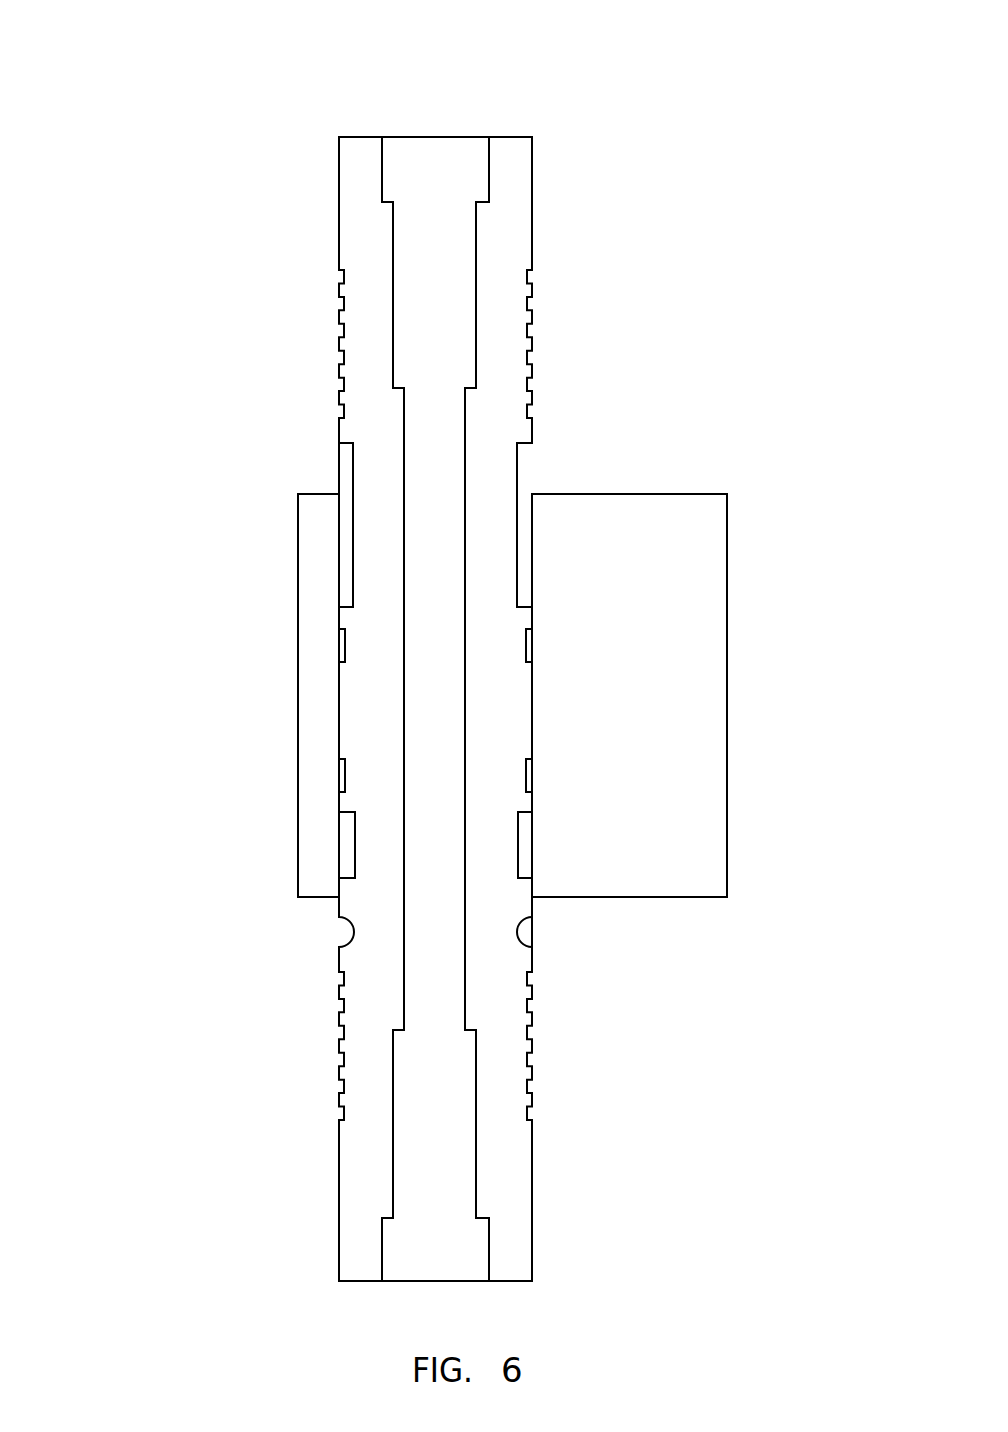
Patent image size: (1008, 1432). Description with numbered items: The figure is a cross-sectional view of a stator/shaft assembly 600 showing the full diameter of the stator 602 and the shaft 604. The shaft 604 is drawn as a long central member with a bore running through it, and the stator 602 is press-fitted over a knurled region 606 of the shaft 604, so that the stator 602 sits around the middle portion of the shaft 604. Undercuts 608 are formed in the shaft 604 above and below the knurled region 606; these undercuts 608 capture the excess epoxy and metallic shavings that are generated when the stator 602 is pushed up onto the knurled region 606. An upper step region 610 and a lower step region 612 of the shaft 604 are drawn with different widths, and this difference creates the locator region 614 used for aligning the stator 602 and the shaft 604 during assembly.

The stator/shaft assembly 600 is at (462, 642).
The stator 602 is at (638, 588).
The shaft 604 is at (355, 237).
The knurled region 606 is at (537, 703).
The undercuts 608 is at (335, 770).
The upper step region 610 is at (345, 492).
The lower step region 612 is at (337, 850).
The locator region 614 is at (538, 905).